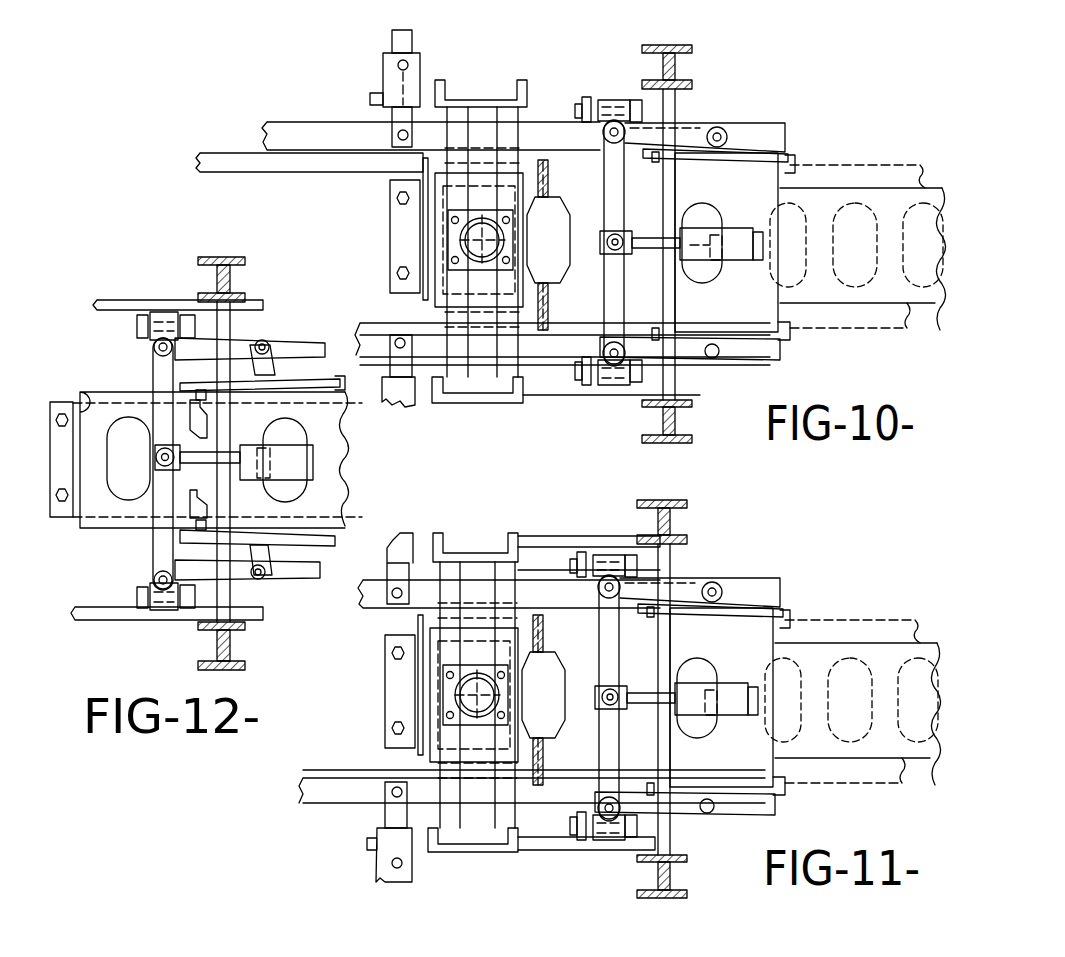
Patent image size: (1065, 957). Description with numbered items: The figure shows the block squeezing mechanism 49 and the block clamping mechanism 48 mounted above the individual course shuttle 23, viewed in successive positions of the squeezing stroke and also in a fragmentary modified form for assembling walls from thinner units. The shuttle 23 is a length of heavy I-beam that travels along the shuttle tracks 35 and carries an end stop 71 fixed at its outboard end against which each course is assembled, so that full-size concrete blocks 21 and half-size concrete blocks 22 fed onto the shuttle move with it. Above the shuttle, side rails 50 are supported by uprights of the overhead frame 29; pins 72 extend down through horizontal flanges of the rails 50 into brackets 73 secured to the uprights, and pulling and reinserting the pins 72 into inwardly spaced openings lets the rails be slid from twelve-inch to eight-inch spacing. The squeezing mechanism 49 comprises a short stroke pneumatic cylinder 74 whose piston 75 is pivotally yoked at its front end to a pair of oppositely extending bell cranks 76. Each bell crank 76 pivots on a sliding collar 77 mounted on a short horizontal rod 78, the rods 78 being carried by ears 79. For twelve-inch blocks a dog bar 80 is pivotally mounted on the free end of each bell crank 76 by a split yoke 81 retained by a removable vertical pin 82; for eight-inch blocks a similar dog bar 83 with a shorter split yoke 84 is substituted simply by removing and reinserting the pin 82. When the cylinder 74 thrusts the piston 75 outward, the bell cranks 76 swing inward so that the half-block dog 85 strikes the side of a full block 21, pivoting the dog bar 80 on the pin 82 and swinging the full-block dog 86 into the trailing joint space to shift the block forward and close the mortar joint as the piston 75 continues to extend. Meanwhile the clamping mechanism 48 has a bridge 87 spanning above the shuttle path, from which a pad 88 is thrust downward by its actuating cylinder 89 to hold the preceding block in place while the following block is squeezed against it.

In FIG. 10, the full-size concrete block 21 is at (866, 165).
In FIG. 11, the full-size concrete block 21 is at (751, 676).
In FIG. 12, the full-size concrete block 21 is at (336, 446).
In FIG. 10, the half-size concrete block 22 is at (418, 221).
In FIG. 11, the half-size concrete block 22 is at (383, 686).
In FIG. 10, the individual course shuttle 23 is at (896, 185).
In FIG. 11, the individual course shuttle 23 is at (851, 667).
In FIG. 12, the individual course shuttle 23 is at (370, 481).
In FIG. 10, the overhead frame 29 is at (480, 78).
In FIG. 10, the shuttle track 35 is at (226, 172).
In FIG. 10, the block clamping mechanism 48 is at (418, 167).
In FIG. 11, the block clamping mechanism 48 is at (379, 685).
In FIG. 10, the squeezing mechanism 49 is at (790, 125).
In FIG. 11, the squeezing mechanism 49 is at (802, 546).
In FIG. 12, the squeezing mechanism 49 is at (272, 304).
In FIG. 10, the side rail 50 is at (286, 172).
In FIG. 11, the side rail 50 is at (532, 693).
In FIG. 12, the end stop 71 is at (92, 400).
In FIG. 10, the pin 72 is at (402, 338).
In FIG. 11, the pin 72 is at (371, 695).
In FIG. 10, the bracket 73 is at (392, 112).
In FIG. 11, the bracket 73 is at (369, 680).
In FIG. 10, the short stroke pneumatic cylinder 74 is at (712, 267).
In FIG. 11, the short stroke pneumatic cylinder 74 is at (721, 697).
In FIG. 12, the short stroke pneumatic cylinder 74 is at (264, 478).
In FIG. 10, the piston 75 is at (655, 292).
In FIG. 11, the piston 75 is at (635, 687).
In FIG. 12, the piston 75 is at (268, 462).
In FIG. 10, the bell crank 76 is at (604, 306).
In FIG. 11, the bell crank 76 is at (585, 698).
In FIG. 12, the bell crank 76 is at (152, 363).
In FIG. 10, the sliding collar 77 is at (618, 98).
In FIG. 11, the sliding collar 77 is at (588, 715).
In FIG. 12, the sliding collar 77 is at (161, 318).
In FIG. 10, the short horizontal rod 78 is at (598, 100).
In FIG. 11, the short horizontal rod 78 is at (607, 713).
In FIG. 12, the short horizontal rod 78 is at (184, 318).
In FIG. 10, the ear 79 is at (574, 114).
In FIG. 11, the ear 79 is at (446, 720).
In FIG. 12, the ear 79 is at (137, 328).
In FIG. 10, the dog bar 80 is at (726, 162).
In FIG. 11, the dog bar 80 is at (709, 699).
In FIG. 10, the split yoke 81 is at (735, 127).
In FIG. 11, the split yoke 81 is at (700, 701).
In FIG. 10, the removable vertical pin 82 is at (722, 108).
In FIG. 11, the removable vertical pin 82 is at (714, 699).
In FIG. 12, the removable vertical pin 82 is at (262, 326).
In FIG. 12, the dog bar 83 is at (240, 402).
In FIG. 12, the split yoke 84 is at (272, 366).
In FIG. 10, the half-block dog 85 is at (656, 162).
In FIG. 11, the half-block dog 85 is at (639, 701).
In FIG. 12, the half-block dog 85 is at (205, 420).
In FIG. 10, the full-block dog 86 is at (788, 170).
In FIG. 11, the full-block dog 86 is at (755, 702).
In FIG. 12, the full-block dog 86 is at (332, 388).
In FIG. 10, the bridge 87 is at (483, 406).
In FIG. 11, the bridge 87 is at (442, 721).
In FIG. 10, the pad 88 is at (528, 262).
In FIG. 11, the pad 88 is at (429, 695).
In FIG. 10, the actuating cylinder 89 is at (500, 233).
In FIG. 11, the actuating cylinder 89 is at (498, 695).